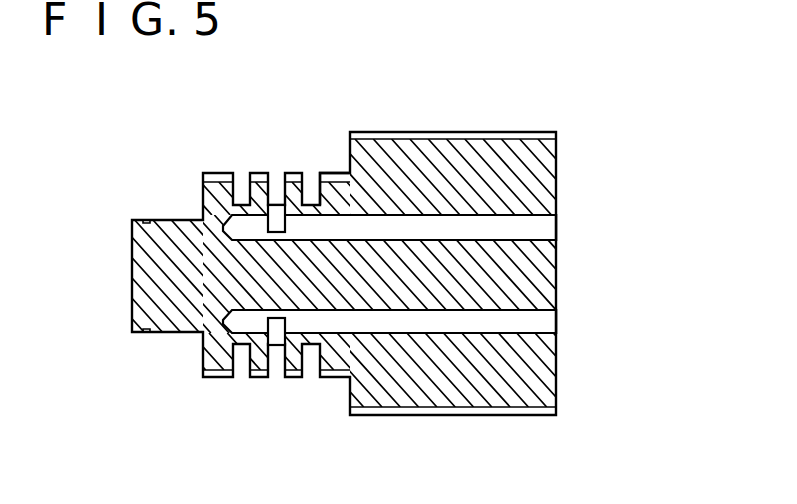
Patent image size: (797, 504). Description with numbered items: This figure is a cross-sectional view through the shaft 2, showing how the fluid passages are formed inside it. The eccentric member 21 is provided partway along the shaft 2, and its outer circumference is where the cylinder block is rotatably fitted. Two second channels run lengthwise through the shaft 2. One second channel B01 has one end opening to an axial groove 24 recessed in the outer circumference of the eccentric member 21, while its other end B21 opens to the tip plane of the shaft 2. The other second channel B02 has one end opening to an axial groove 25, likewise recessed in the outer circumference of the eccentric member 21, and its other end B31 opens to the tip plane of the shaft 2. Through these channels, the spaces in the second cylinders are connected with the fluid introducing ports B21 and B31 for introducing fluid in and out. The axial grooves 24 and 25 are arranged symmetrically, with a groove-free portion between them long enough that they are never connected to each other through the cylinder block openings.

The shaft 2 is at (573, 131).
The eccentric member 21 is at (333, 173).
The axial groove 24 is at (276, 358).
The axial groove 25 is at (276, 190).
The second channel B02 is at (492, 220).
The fluid introducing port B31 is at (557, 216).
The fluid introducing port B21 is at (558, 318).
The second channel B01 is at (503, 323).